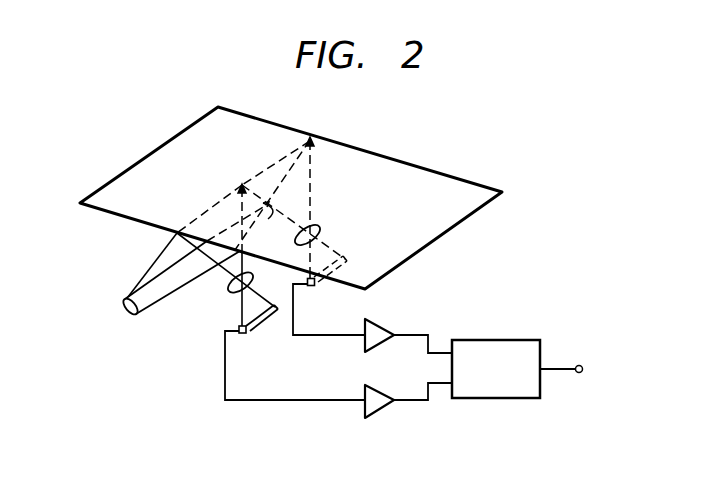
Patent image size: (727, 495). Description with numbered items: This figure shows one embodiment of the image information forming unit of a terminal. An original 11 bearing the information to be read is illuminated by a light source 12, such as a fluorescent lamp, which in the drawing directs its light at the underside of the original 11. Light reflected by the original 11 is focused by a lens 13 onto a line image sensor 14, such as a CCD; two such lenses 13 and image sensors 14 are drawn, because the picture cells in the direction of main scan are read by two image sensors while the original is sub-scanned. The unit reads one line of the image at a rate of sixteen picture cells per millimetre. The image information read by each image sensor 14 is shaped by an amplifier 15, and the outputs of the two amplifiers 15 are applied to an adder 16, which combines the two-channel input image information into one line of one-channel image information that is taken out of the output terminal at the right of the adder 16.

The original 11 is at (417, 173).
The light source 12 is at (124, 314).
The lens 13 is at (229, 291).
The line image sensor 14 is at (243, 334).
The amplifier 15 is at (385, 329).
The adder 16 is at (490, 340).